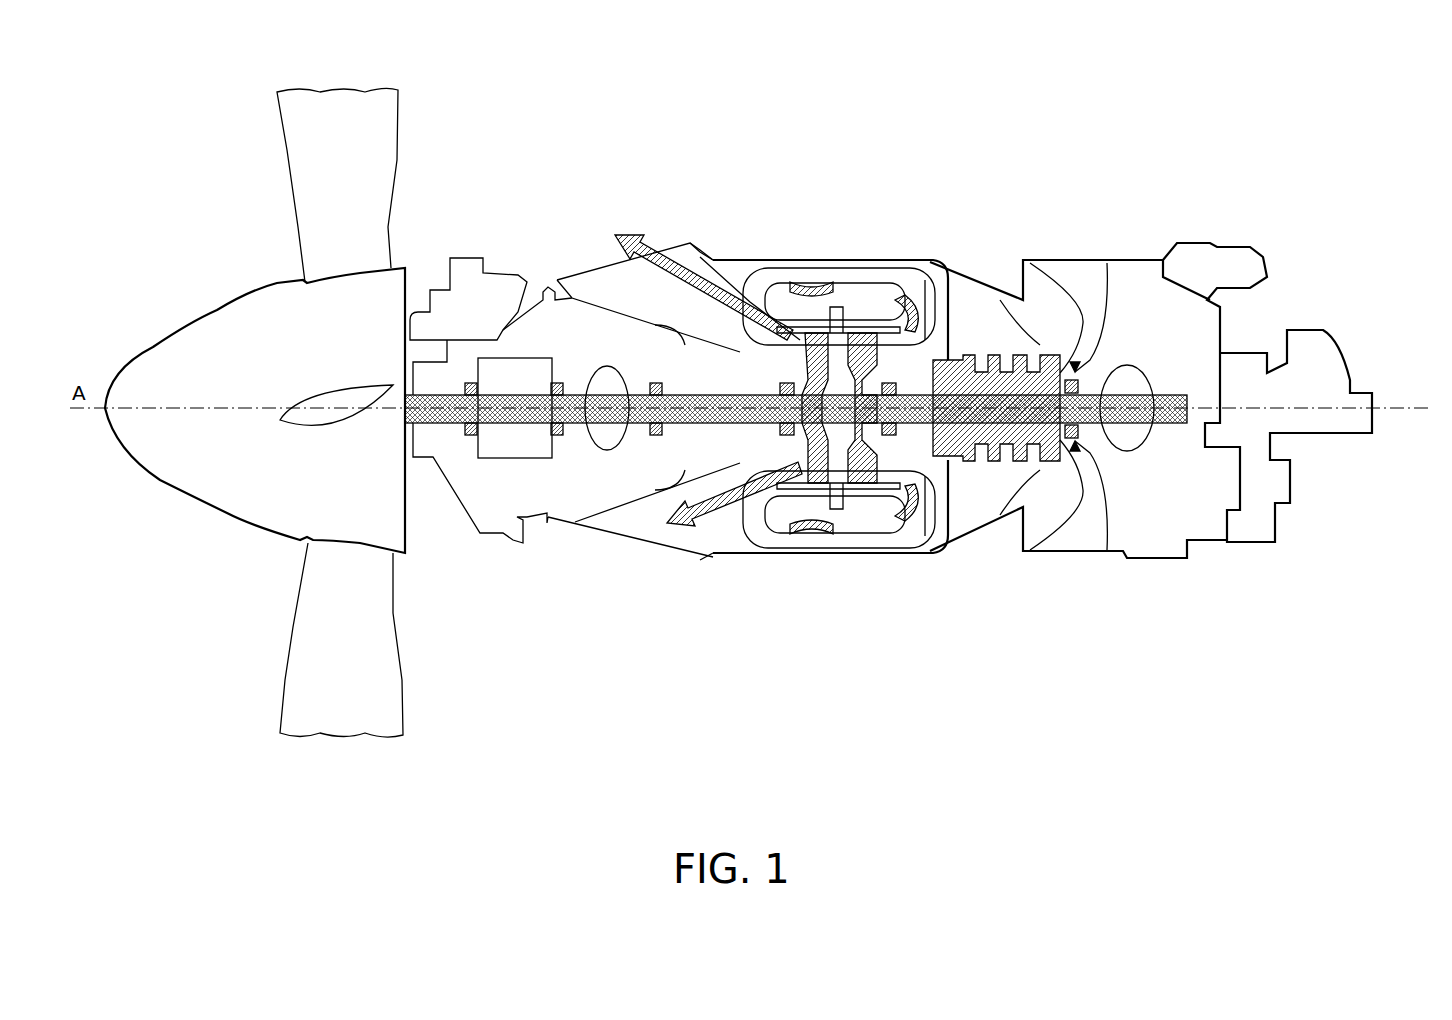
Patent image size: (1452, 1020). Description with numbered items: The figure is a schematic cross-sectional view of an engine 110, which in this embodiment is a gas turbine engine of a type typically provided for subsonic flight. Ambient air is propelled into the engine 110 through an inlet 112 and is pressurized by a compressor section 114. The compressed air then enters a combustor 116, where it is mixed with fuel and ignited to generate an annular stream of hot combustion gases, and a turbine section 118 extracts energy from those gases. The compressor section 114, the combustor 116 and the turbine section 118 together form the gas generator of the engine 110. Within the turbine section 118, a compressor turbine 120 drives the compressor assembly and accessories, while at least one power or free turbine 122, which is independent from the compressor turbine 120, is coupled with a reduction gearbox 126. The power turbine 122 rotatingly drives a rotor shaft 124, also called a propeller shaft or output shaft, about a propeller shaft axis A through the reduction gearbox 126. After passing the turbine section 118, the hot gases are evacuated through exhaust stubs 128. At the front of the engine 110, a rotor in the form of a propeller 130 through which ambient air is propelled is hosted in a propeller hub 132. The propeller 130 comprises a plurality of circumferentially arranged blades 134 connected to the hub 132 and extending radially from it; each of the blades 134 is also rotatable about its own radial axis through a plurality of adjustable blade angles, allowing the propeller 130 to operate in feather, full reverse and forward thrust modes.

The engine 110 is at (753, 170).
The inlet 112 is at (1090, 236).
The compressor section 114 is at (977, 300).
The combustor 116 is at (871, 292).
The turbine section 118 is at (845, 415).
The compressor turbine 120 is at (928, 478).
The power turbine 122 is at (803, 415).
The rotor shaft 124 is at (532, 448).
The reduction gearbox 126 is at (515, 410).
The exhaust stubs 128 is at (613, 238).
The propeller 130 is at (255, 402).
The propeller hub 132 is at (232, 323).
The blades 134 is at (308, 160).